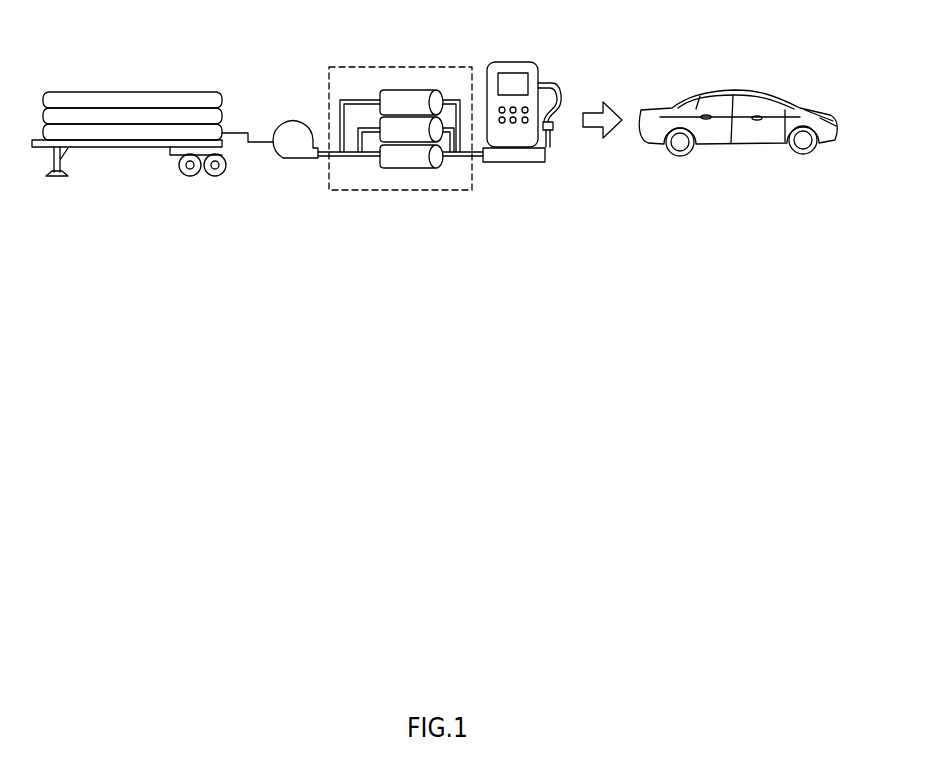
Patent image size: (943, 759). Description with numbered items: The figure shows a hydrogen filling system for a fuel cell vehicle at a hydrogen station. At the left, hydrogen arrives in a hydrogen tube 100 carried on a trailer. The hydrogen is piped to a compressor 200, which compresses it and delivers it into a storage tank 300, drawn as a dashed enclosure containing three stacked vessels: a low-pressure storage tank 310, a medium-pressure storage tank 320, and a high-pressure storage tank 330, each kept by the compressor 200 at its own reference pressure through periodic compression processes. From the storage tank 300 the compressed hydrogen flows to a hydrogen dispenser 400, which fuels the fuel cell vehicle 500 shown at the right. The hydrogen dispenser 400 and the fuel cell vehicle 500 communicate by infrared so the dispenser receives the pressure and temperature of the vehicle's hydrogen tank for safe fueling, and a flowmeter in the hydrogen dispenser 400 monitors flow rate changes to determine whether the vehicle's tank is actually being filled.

The hydrogen tube 100 is at (130, 91).
The compressor 200 is at (291, 121).
The storage tank 300 is at (341, 67).
The low-pressure storage tank 310 is at (390, 89).
The medium-pressure storage tank 320 is at (430, 125).
The high-pressure storage tank 330 is at (410, 169).
The hydrogen dispenser 400 is at (512, 62).
The fuel cell vehicle 500 is at (726, 91).